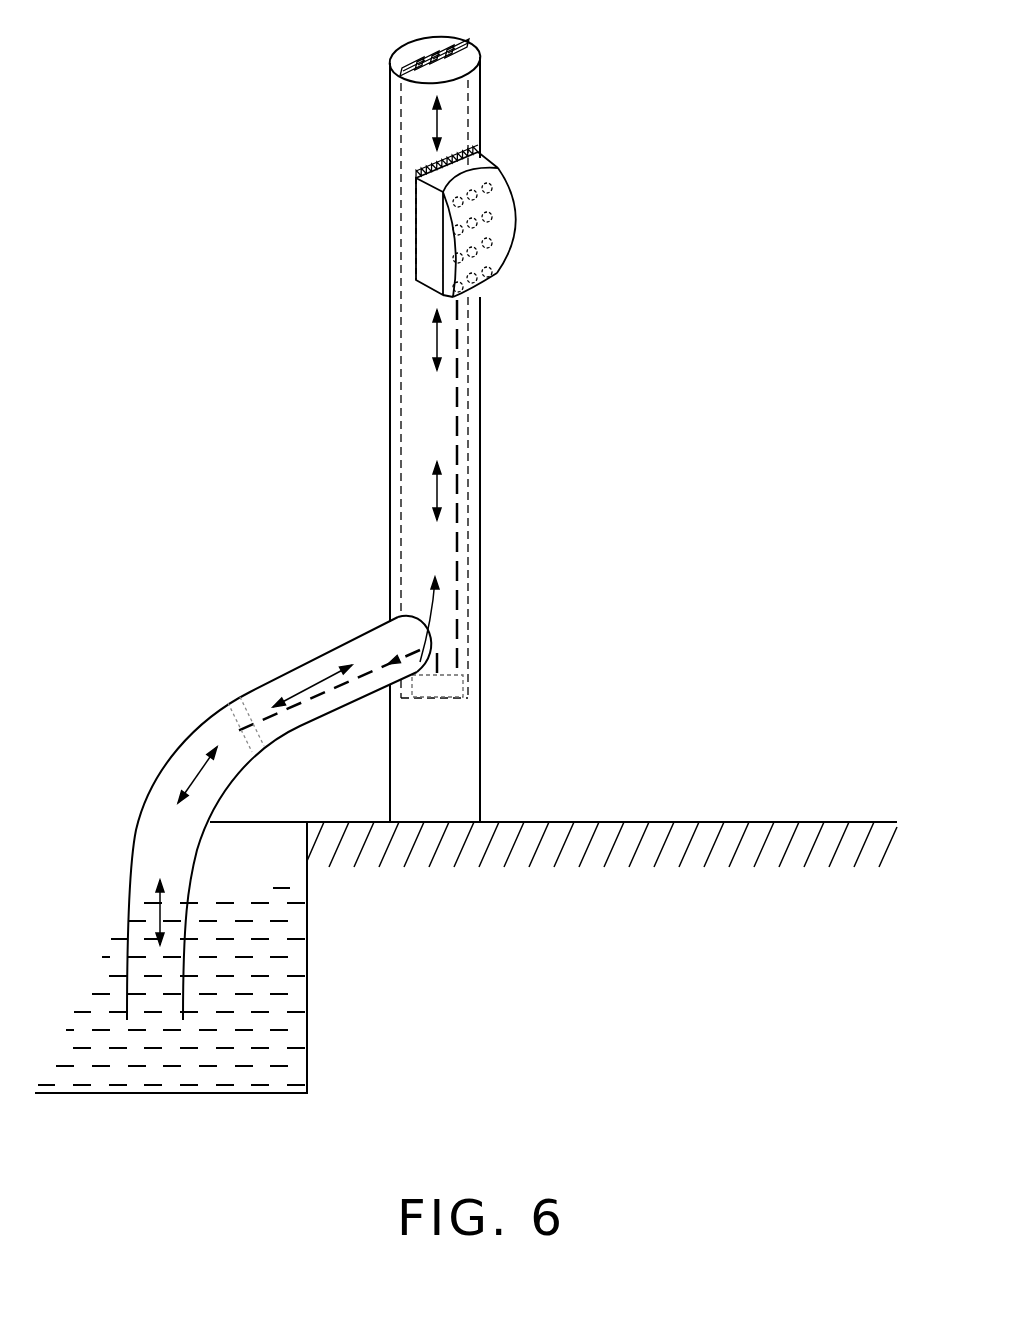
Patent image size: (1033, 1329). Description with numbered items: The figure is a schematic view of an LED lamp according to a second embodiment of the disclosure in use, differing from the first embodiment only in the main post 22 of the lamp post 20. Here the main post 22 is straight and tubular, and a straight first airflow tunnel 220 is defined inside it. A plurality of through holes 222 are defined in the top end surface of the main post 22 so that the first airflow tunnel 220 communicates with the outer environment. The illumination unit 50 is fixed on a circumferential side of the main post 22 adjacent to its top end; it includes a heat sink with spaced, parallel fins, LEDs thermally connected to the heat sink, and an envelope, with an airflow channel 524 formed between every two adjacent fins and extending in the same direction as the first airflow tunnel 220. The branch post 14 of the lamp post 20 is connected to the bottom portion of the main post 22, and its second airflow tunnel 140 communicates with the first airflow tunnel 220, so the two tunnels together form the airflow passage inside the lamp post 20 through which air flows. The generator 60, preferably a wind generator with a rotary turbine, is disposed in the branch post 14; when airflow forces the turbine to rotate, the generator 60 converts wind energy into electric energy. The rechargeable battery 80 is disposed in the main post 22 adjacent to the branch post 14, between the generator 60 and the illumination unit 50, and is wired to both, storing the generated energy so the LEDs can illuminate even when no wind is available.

The lamp post 20 is at (197, 442).
The main post 22 is at (395, 493).
The first airflow tunnel 220 is at (445, 420).
The through holes 222 is at (470, 45).
The branch post 14 is at (333, 652).
The second airflow tunnel 140 is at (257, 707).
The generator 60 is at (233, 732).
The rechargeable battery 80 is at (453, 683).
The illumination unit 50 is at (487, 167).
The airflow channel 524 is at (467, 152).